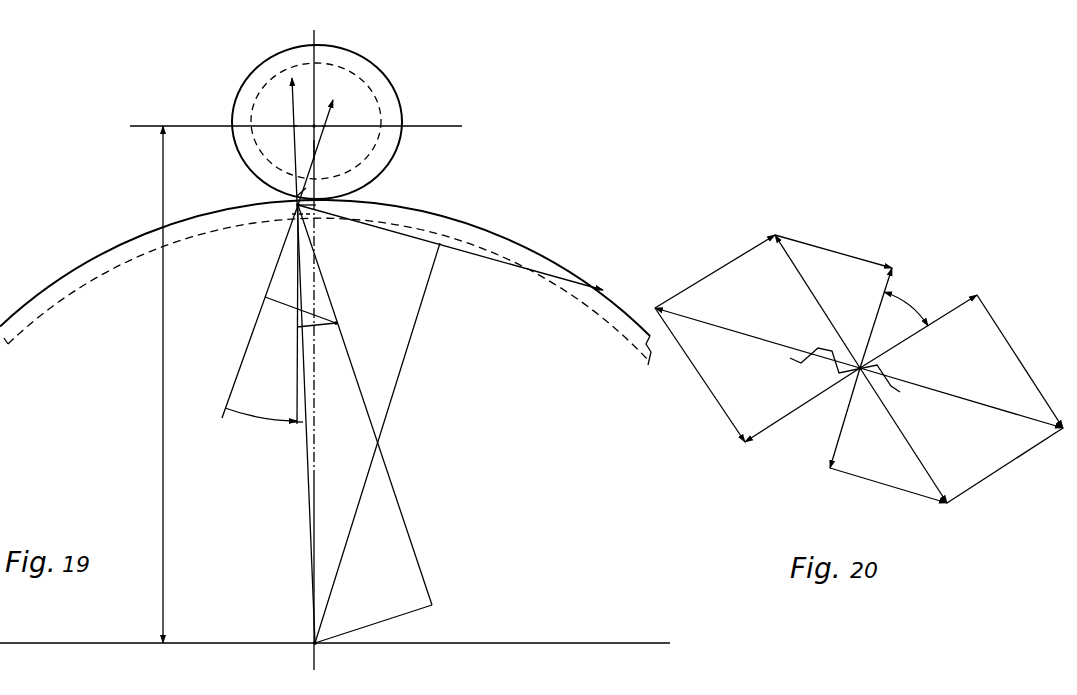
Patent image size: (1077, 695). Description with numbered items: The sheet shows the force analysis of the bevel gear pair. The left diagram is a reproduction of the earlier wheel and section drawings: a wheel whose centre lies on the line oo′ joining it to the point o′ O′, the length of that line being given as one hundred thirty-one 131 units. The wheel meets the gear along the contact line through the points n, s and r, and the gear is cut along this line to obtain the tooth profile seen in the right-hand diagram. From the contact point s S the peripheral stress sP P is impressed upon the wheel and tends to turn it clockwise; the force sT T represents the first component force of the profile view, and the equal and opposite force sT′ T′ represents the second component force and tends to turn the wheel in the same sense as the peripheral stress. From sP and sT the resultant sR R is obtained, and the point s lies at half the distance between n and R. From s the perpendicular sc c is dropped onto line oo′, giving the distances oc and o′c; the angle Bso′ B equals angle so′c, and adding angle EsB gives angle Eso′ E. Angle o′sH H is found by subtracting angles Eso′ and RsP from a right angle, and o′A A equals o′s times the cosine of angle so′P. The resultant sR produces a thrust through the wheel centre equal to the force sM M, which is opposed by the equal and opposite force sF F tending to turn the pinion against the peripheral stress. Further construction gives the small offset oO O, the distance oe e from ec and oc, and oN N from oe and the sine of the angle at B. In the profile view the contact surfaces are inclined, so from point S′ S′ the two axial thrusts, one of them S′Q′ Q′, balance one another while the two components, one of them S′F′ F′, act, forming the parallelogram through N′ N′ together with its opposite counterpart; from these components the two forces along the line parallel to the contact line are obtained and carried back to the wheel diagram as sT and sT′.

In FIG. 19, the distance oo′ 131 is at (154, 384).
In FIG. 19, the point F of force sF F is at (296, 358).
In FIG. 19, the point T′ of force sT′ T′ is at (323, 149).
In FIG. 20, the point T′ of force sT′ T′ is at (841, 427).
In FIG. 19, the point O is at (314, 120).
In FIG. 19, the point D on horizontal axis D is at (289, 133).
In FIG. 19, the point N is at (326, 133).
In FIG. 19, the point e is at (318, 150).
In FIG. 19, the point r of contact line nsr r is at (301, 190).
In FIG. 19, the contact point s S is at (293, 204).
In FIG. 19, the foot c of perpendicular sc c is at (310, 206).
In FIG. 19, the point n of contact line nsr n is at (295, 216).
In FIG. 19, the peripheral stress sP P is at (450, 247).
In FIG. 19, the point A is at (383, 439).
In FIG. 19, the point H is at (372, 424).
In FIG. 19, the point B is at (297, 324).
In FIG. 19, the point E is at (253, 313).
In FIG. 19, the point T of force sT T is at (292, 309).
In FIG. 19, the point M of force sM M is at (310, 330).
In FIG. 19, the point R of resultant sR R is at (343, 327).
In FIG. 19, the point o′ O′ is at (323, 636).
In FIG. 20, the point S′ is at (860, 359).
In FIG. 20, the point N′ is at (928, 327).
In FIG. 20, the point Q′ of resultant S′ Q′ is at (961, 375).
In FIG. 20, the point F′ of component S′ F′ is at (946, 443).